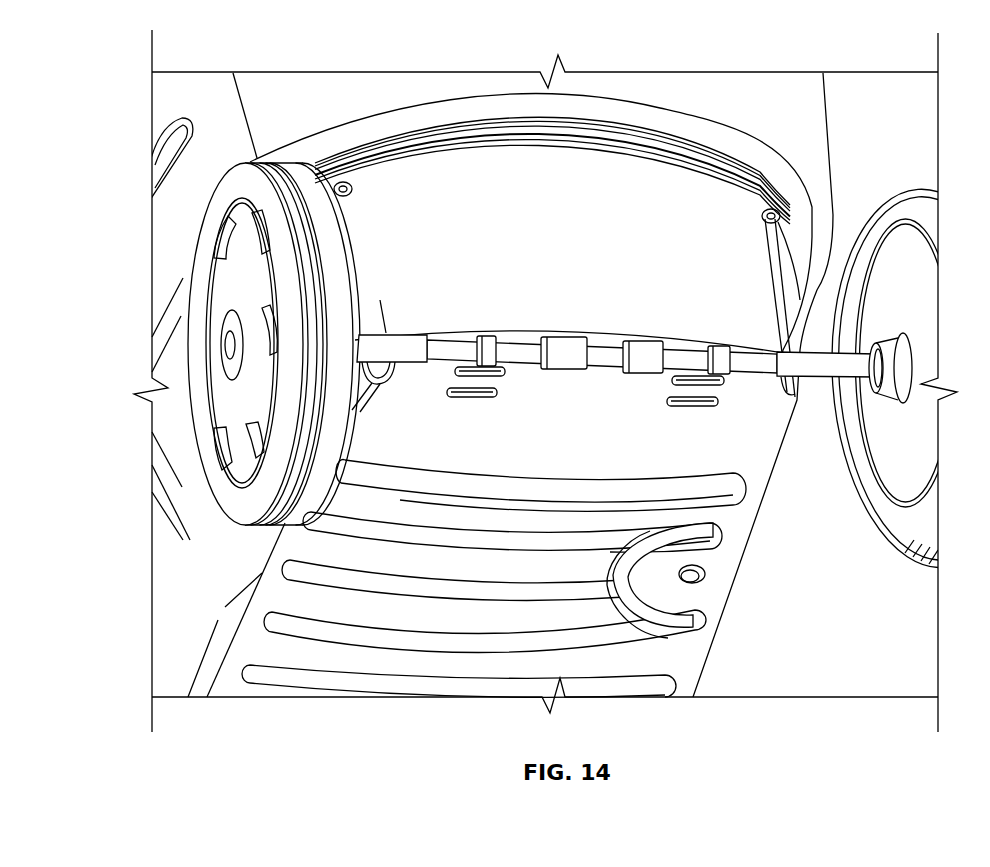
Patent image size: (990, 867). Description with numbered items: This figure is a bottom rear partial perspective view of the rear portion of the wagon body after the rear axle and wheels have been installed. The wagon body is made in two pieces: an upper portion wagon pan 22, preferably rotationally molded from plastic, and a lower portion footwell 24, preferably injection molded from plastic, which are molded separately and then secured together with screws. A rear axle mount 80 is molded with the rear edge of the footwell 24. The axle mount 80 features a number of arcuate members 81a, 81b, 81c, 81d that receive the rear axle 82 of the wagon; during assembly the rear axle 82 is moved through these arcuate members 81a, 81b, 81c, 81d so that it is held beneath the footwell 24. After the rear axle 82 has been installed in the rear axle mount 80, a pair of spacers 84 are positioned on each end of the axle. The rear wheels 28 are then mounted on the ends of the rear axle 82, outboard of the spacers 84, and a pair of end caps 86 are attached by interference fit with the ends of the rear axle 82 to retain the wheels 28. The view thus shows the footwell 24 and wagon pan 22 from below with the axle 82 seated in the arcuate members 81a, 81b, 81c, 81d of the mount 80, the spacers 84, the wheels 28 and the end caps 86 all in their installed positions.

The wagon pan 22 is at (803, 118).
The footwell 24 is at (566, 222).
The wheels 28 is at (226, 375).
The rear axle mount 80 is at (632, 362).
The arcuate member 81a is at (486, 338).
The arcuate member 81b is at (564, 342).
The arcuate member 81c is at (645, 346).
The arcuate member 81d is at (716, 348).
The rear axle 82 is at (513, 353).
The spacers 84 is at (400, 350).
The end caps 86 is at (228, 341).